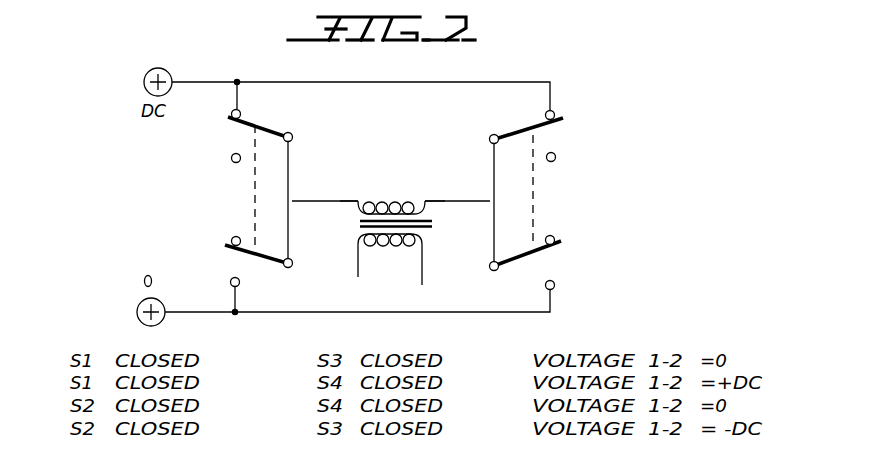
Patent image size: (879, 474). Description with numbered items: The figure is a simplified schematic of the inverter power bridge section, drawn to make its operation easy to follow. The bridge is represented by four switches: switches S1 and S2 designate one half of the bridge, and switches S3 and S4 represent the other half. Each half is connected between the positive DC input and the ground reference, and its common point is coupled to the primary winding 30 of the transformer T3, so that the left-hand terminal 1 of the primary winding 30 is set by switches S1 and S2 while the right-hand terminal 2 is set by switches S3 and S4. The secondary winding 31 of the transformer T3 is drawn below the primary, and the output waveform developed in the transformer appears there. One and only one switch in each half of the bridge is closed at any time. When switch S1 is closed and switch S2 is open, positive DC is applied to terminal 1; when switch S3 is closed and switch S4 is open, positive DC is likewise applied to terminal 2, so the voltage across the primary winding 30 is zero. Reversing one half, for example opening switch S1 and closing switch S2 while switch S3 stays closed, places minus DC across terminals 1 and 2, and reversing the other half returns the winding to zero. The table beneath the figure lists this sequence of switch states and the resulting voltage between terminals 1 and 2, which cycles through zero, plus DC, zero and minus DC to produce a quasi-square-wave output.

The primary winding 30 is at (391, 195).
The secondary winding of transformer T3 31 is at (409, 252).
The transformer T3 is at (418, 225).
The switch S1 is at (231, 134).
The switch S2 is at (233, 263).
The switch S3 is at (539, 141).
The switch S4 is at (538, 267).
The terminal 1 is at (350, 188).
The terminal 2 is at (435, 188).